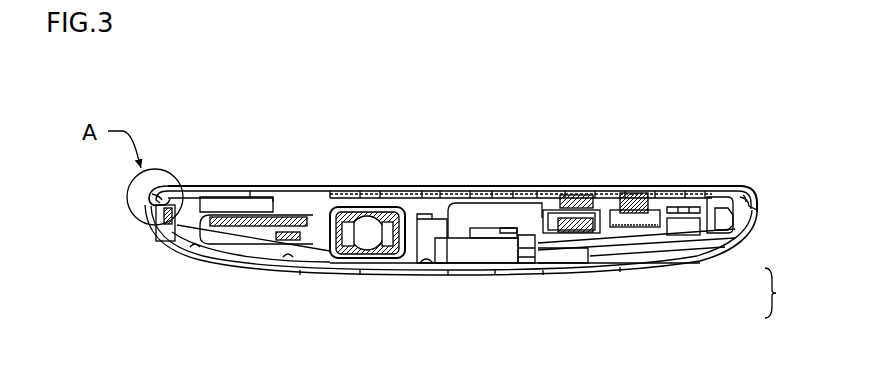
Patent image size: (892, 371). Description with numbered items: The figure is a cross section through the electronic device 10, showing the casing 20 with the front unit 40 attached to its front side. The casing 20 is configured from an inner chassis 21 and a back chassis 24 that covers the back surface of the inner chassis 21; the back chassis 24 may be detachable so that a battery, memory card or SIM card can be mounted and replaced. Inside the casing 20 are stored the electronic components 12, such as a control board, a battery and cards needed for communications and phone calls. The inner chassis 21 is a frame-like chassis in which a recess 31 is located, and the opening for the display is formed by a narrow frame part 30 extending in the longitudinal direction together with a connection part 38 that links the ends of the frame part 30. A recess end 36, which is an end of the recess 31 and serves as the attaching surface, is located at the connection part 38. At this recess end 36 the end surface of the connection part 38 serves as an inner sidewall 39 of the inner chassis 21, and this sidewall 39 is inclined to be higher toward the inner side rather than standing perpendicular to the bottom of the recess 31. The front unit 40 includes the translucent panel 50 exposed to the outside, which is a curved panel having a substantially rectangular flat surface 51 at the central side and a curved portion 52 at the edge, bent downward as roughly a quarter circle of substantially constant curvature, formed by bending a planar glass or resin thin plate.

The electronic device 10 is at (714, 118).
The electronic components 12 is at (388, 250).
The casing 20 is at (502, 264).
The inner chassis 21 is at (728, 236).
The back chassis 24 is at (684, 262).
The frame part 30 is at (140, 212).
The recess 31 is at (160, 227).
The recess end 36 is at (164, 261).
The connection part 38 is at (252, 190).
The inner sidewall 39 is at (157, 191).
The front unit 40 is at (440, 196).
The translucent panel 50 is at (440, 156).
The flat surface 51 is at (358, 190).
The curved portion 52 is at (150, 192).